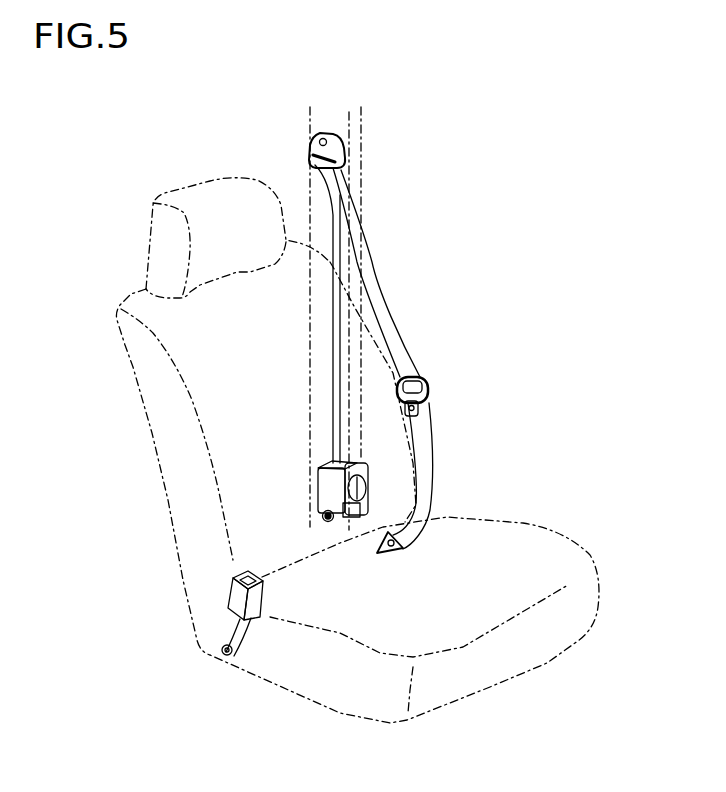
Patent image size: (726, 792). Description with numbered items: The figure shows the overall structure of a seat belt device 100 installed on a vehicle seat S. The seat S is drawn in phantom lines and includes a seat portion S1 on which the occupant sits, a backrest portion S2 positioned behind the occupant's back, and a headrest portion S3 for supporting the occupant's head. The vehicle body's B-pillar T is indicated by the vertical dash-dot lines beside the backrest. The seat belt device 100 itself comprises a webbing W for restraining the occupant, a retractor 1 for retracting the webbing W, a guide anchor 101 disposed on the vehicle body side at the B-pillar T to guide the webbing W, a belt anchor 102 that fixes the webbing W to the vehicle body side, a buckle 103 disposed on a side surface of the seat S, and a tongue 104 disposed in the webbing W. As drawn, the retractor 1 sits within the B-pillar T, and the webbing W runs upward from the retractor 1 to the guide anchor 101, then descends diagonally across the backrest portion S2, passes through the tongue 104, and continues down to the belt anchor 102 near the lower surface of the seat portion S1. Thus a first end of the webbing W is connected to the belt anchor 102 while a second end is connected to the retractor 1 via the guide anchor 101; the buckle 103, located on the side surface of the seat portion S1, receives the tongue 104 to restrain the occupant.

The seat S is at (317, 450).
The seat portion S1 is at (530, 566).
The backrest portion S2 is at (243, 348).
The headrest portion S3 is at (243, 236).
The B-pillar T is at (355, 127).
The webbing W is at (393, 273).
The retractor 1 is at (330, 488).
The seat belt device 100 is at (327, 394).
The guide anchor 101 is at (308, 148).
The belt anchor 102 is at (394, 557).
The buckle 103 is at (235, 592).
The tongue 104 is at (430, 390).